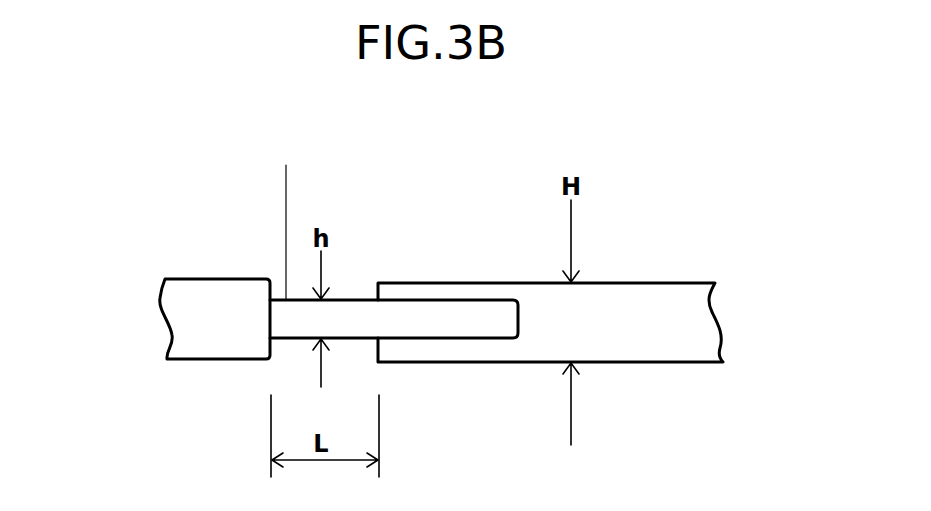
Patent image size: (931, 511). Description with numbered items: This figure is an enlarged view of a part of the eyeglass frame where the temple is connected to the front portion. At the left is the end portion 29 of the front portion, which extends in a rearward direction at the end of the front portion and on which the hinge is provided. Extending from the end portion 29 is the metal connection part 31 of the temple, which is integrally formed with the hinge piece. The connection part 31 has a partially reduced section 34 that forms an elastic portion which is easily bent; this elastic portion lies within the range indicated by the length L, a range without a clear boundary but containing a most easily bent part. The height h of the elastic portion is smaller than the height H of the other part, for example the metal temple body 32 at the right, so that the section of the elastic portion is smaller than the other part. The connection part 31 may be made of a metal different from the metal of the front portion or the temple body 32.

The end portion 29 is at (213, 279).
The connection part 31 is at (358, 300).
The temple body 32 is at (667, 283).
The reduced section 34 is at (291, 221).